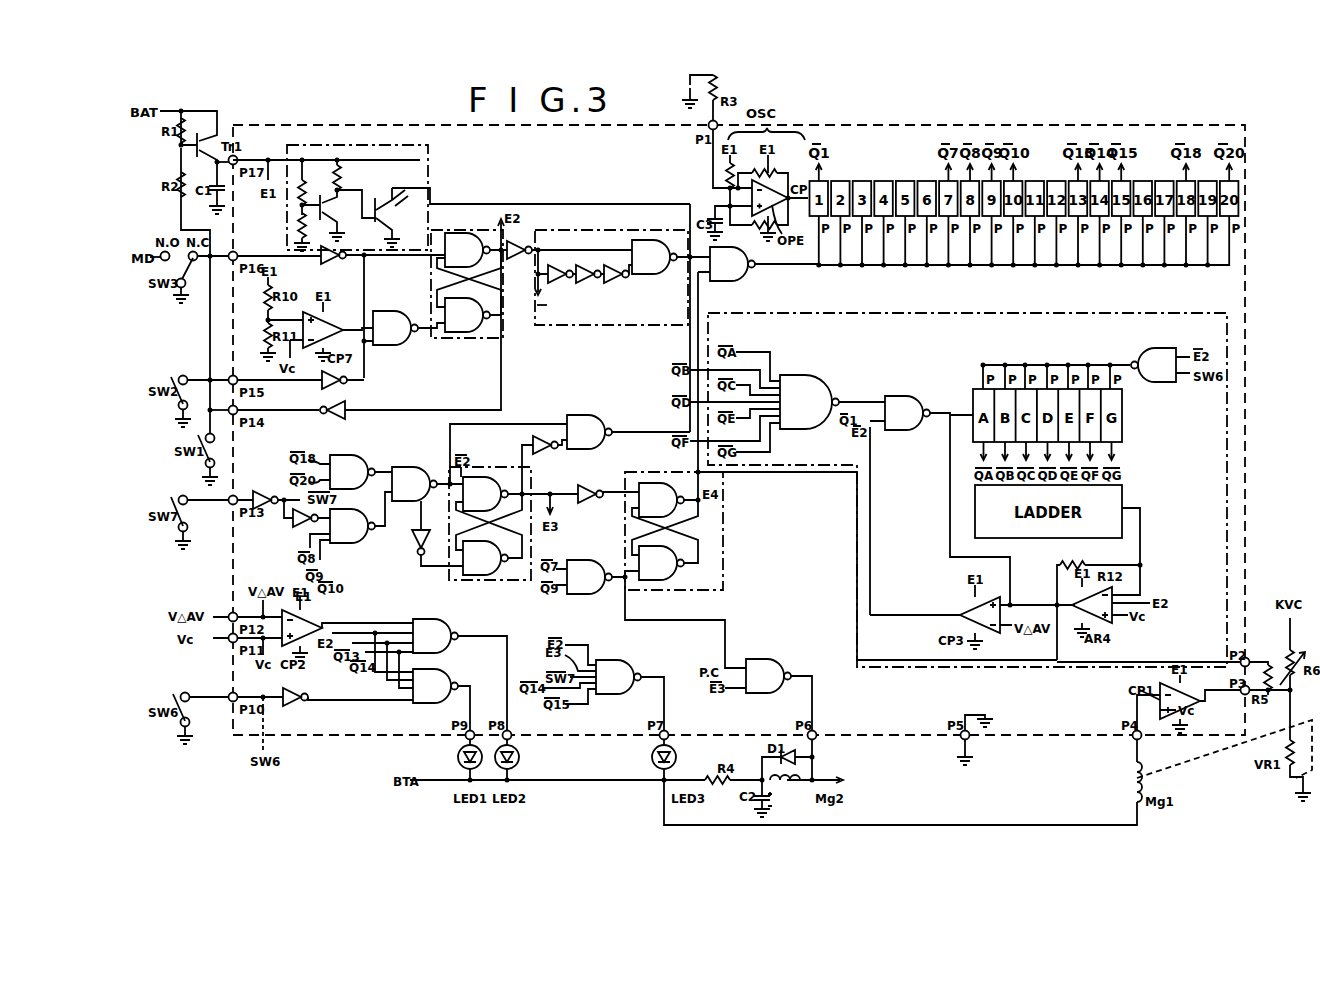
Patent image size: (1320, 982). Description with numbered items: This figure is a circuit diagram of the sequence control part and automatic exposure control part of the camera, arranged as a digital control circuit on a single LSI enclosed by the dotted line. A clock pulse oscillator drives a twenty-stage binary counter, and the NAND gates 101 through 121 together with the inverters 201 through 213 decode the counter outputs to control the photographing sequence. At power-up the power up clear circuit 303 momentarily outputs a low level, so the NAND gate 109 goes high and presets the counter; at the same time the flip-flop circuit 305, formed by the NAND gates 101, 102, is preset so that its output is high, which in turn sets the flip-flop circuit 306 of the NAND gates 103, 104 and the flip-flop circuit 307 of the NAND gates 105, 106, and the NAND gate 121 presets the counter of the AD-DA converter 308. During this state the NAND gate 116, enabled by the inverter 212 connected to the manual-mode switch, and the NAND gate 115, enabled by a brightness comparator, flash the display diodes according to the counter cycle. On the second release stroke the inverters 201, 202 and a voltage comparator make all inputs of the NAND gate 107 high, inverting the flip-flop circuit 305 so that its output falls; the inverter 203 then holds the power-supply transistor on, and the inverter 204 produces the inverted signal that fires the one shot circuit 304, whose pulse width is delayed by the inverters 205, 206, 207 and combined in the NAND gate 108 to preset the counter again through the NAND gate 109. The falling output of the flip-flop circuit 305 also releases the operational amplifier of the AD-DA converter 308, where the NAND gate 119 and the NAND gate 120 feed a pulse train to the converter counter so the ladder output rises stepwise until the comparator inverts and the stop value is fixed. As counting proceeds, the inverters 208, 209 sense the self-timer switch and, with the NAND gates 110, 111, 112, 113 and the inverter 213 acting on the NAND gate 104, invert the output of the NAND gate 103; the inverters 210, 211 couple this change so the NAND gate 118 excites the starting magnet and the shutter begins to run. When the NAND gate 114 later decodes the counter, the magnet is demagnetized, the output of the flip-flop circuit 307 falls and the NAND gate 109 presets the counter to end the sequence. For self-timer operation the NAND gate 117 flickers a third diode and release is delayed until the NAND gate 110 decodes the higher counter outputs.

The NAND gate 101 is at (467, 250).
The NAND gate 102 is at (467, 315).
The NAND gate 103 is at (485, 494).
The NAND gate 104 is at (485, 558).
The NAND gate 105 is at (661, 500).
The NAND gate 106 is at (661, 563).
The NAND gate 107 is at (395, 328).
The NAND gate 108 is at (654, 257).
The NAND gate 109 is at (732, 264).
The NAND gate 110 is at (352, 472).
The NAND gate 111 is at (352, 526).
The NAND gate 112 is at (414, 484).
The NAND gate 113 is at (589, 432).
The NAND gate 114 is at (589, 577).
The NAND gate 115 is at (435, 636).
The NAND gate 116 is at (435, 686).
The NAND gate 117 is at (618, 677).
The NAND gate 118 is at (768, 676).
The NAND gate 119 is at (809, 402).
The NAND gate 120 is at (907, 413).
The NAND gate 121 is at (1153, 365).
The inverter 201 is at (333, 266).
The inverter 202 is at (337, 372).
The inverter 203 is at (344, 403).
The inverter 204 is at (517, 261).
The inverter 205 is at (563, 283).
The inverter 206 is at (586, 290).
The inverter 207 is at (615, 283).
The inverter 208 is at (261, 492).
The inverter 209 is at (293, 525).
The inverter 210 is at (546, 453).
The inverter 211 is at (588, 502).
The inverter 212 is at (296, 707).
The inverter 213 is at (409, 542).
The power up clear circuit 303 is at (488, 198).
The one shot circuit 304 is at (611, 277).
The flip-flop circuit 305 is at (486, 287).
The flip-flop circuit 306 is at (490, 510).
The flip-flop circuit 307 is at (697, 531).
The AD-DA converter 308 is at (967, 490).